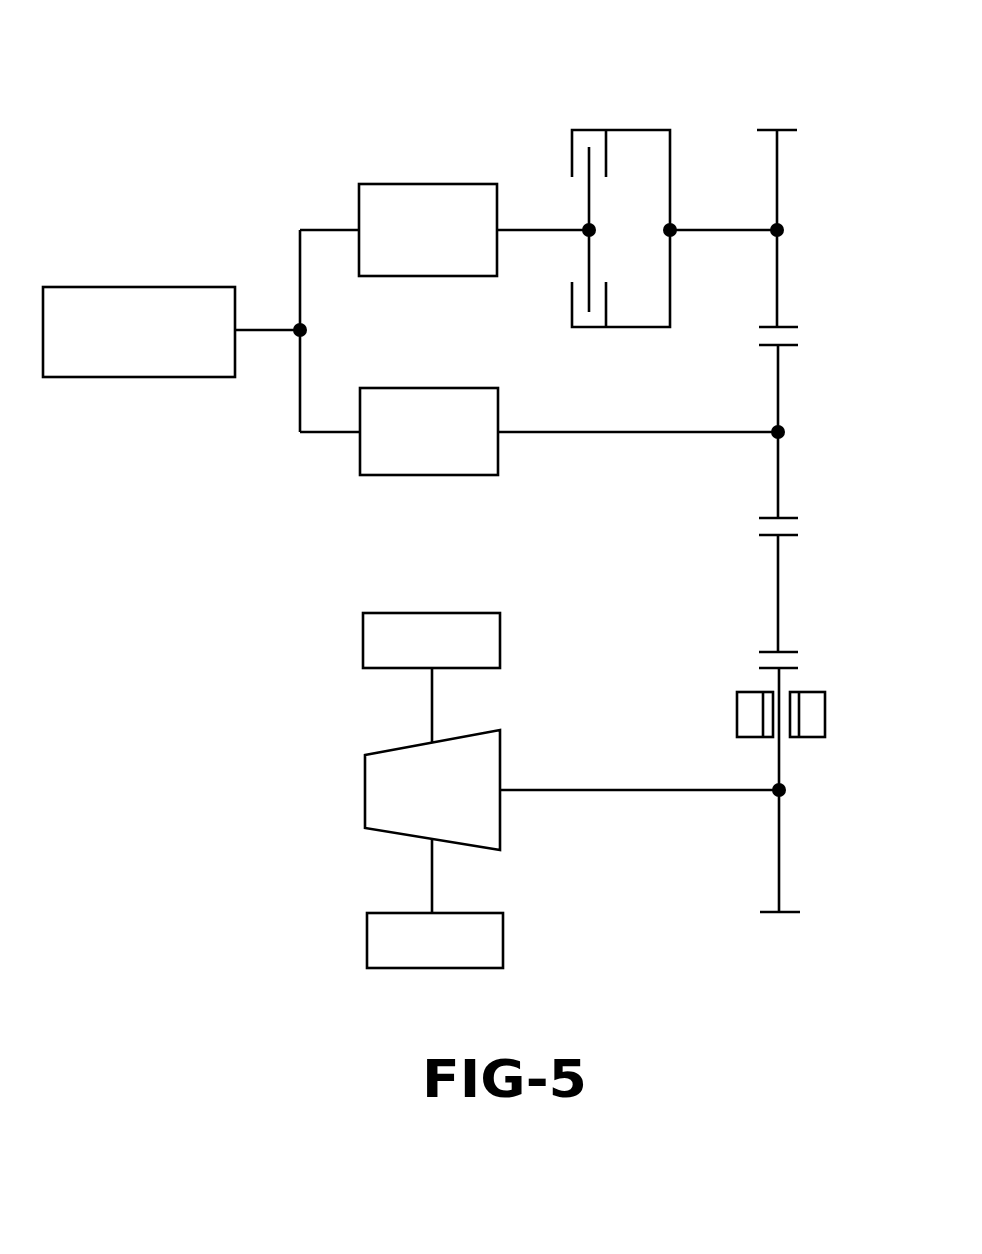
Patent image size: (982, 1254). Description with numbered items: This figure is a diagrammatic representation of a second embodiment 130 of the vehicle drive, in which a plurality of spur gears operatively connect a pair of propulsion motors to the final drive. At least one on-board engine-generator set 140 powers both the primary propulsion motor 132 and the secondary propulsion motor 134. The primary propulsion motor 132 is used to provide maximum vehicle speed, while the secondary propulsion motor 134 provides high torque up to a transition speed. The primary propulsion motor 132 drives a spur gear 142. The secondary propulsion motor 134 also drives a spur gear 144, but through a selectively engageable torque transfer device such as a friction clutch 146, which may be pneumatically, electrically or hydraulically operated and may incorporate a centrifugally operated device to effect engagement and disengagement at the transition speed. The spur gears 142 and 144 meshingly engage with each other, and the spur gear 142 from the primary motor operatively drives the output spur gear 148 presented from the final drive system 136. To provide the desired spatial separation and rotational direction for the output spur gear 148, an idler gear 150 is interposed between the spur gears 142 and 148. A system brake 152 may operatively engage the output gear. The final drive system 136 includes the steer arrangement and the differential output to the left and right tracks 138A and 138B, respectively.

The second embodiment 130 is at (256, 120).
The primary propulsion motor 132 is at (431, 388).
The secondary propulsion motor 134 is at (430, 184).
The final drive system 136 is at (365, 790).
The left track 138A is at (367, 942).
The right track 138B is at (363, 635).
The engine-generator set 140 is at (133, 287).
The spur gear 142 is at (778, 384).
The spur gear 144 is at (777, 182).
The friction clutch 146 is at (594, 130).
The output spur gear 148 is at (779, 857).
The idler gear 150 is at (778, 587).
The system brake 152 is at (818, 713).